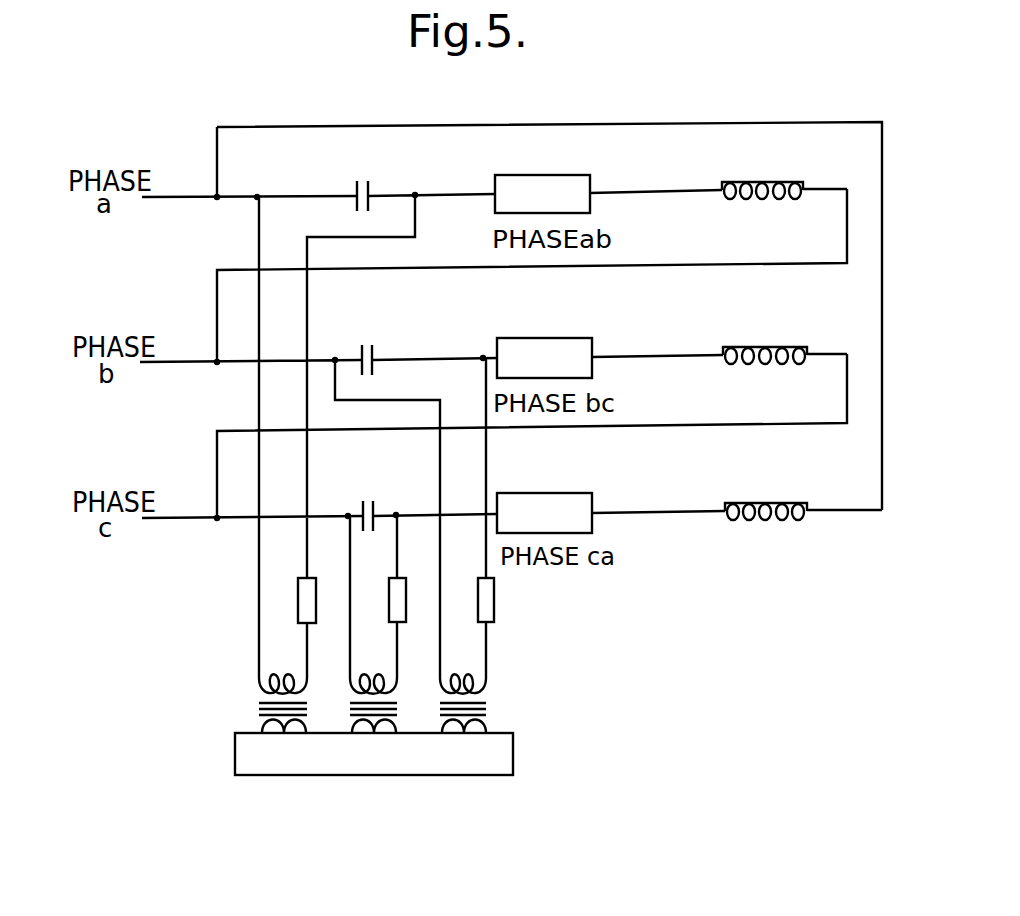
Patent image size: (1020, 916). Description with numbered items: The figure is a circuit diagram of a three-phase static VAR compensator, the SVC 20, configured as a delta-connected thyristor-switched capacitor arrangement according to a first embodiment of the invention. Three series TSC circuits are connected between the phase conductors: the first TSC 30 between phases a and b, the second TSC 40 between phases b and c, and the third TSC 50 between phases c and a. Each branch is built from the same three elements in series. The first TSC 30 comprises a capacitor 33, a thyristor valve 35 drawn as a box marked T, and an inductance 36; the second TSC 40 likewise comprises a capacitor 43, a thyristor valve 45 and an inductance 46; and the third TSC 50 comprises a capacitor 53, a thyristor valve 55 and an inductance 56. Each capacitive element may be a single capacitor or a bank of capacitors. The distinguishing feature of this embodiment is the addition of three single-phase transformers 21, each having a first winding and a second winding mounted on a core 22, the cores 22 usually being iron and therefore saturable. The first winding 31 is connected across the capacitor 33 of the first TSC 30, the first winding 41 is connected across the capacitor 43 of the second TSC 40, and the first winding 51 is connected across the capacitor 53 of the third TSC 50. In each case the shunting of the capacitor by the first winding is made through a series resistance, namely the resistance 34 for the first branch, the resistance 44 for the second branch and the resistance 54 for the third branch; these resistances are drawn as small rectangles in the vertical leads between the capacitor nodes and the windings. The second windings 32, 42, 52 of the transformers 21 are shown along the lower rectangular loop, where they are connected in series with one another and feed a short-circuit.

The three-phase SVC 20 is at (795, 630).
The single-phase transformers 21 is at (220, 780).
The cores 22 is at (242, 713).
The first TSC 30 is at (747, 243).
The first winding 31 is at (262, 678).
The second winding 32 is at (282, 737).
The capacitor 33 is at (365, 185).
The series resistance 34 is at (298, 600).
The thyristor valve 35 is at (590, 175).
The inductance 36 is at (780, 181).
The second TSC 40 is at (747, 411).
The first winding 41 is at (488, 679).
The second winding 42 is at (470, 733).
The capacitor 43 is at (374, 348).
The series resistance 44 is at (496, 598).
The thyristor valve 45 is at (560, 338).
The inductance 46 is at (767, 346).
The third TSC 50 is at (758, 562).
The first winding 51 is at (403, 675).
The second winding 52 is at (370, 737).
The capacitor 53 is at (374, 502).
The series resistance 54 is at (408, 620).
The thyristor valve 55 is at (578, 493).
The inductance 56 is at (793, 501).